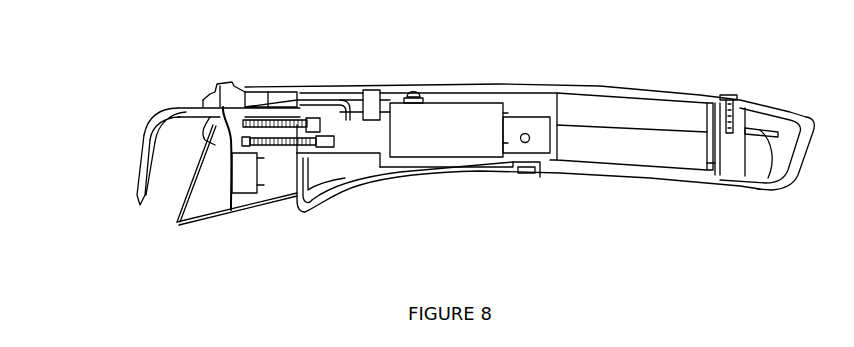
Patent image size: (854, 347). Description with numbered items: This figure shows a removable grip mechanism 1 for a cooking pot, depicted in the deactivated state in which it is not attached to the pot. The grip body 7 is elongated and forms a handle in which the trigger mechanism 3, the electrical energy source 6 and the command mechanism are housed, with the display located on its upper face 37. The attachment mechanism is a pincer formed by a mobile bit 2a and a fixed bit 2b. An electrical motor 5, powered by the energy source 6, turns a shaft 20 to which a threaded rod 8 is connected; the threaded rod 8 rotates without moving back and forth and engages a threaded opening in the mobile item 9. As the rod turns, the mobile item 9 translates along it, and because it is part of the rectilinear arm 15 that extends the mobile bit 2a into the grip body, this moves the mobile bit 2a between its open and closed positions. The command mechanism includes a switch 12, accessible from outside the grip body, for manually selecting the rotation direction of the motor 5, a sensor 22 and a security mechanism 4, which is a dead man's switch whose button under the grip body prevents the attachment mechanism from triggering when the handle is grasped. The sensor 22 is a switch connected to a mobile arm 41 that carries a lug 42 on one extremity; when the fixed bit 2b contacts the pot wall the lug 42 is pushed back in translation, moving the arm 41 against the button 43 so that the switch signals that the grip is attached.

The removable grip mechanism 1 is at (641, 85).
The mobile bit 2a is at (138, 163).
The fixed bit 2b is at (177, 223).
The trigger mechanism 3 is at (283, 79).
The additional security mechanism 4 is at (380, 180).
The electrical motor 5 is at (427, 150).
The electrical energy source 6 is at (643, 163).
The grip body 7 is at (737, 183).
The threaded rod 8 is at (268, 131).
The mobile item 9 is at (267, 117).
The switch 12 is at (372, 90).
The rectilinear arm 15 is at (221, 106).
The shaft 20 is at (357, 142).
The sensor 22 is at (254, 184).
The upper face 37 is at (522, 79).
The mobile arm 41 is at (212, 146).
The lug 42 is at (202, 114).
The button 43 is at (229, 167).